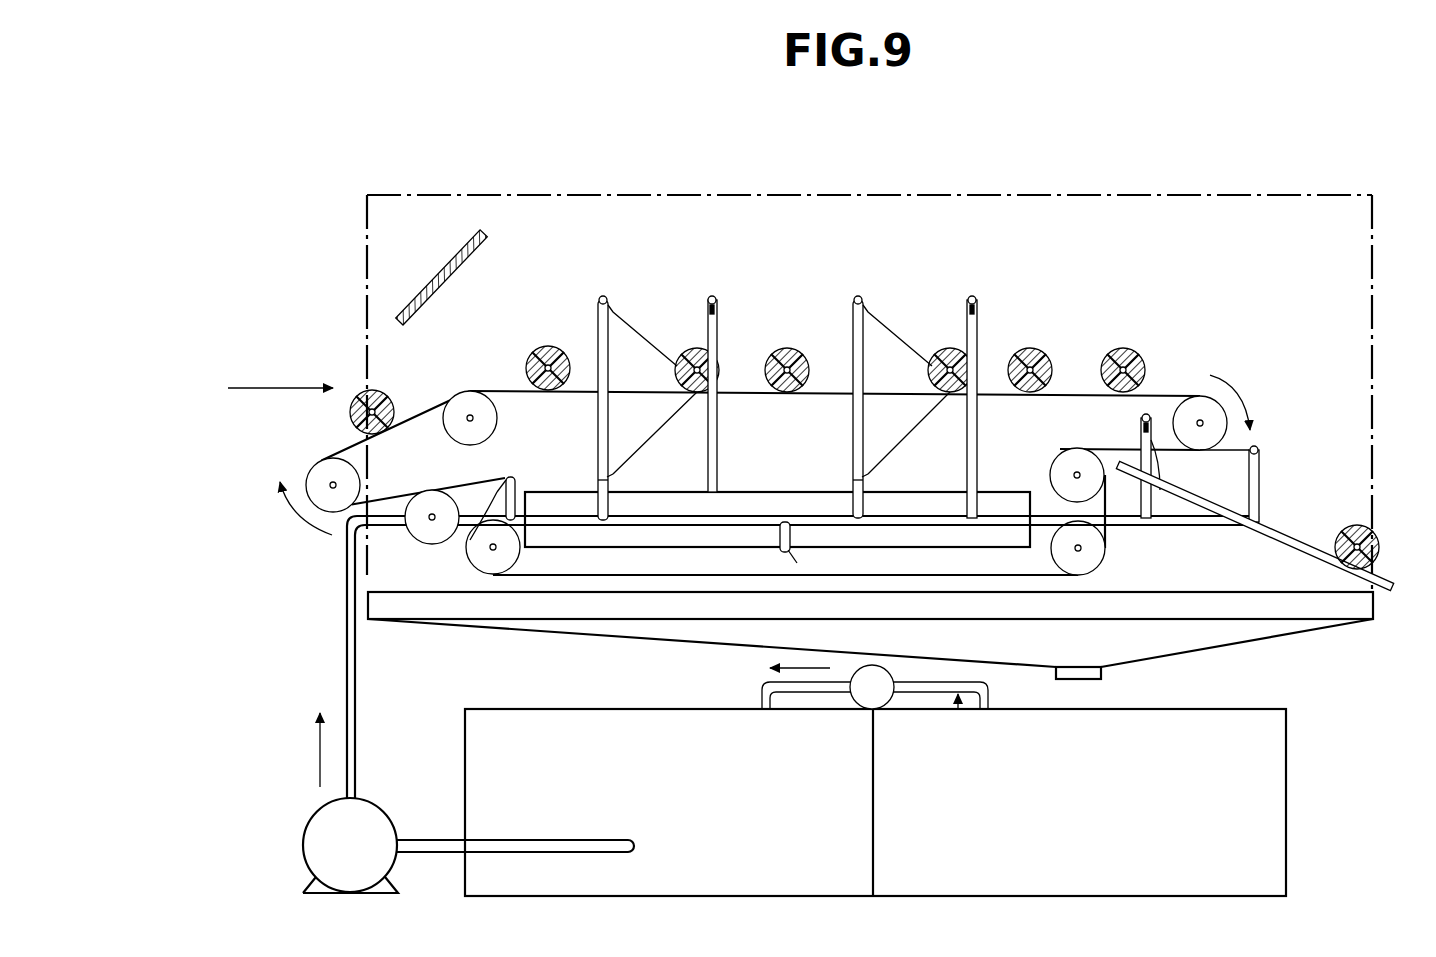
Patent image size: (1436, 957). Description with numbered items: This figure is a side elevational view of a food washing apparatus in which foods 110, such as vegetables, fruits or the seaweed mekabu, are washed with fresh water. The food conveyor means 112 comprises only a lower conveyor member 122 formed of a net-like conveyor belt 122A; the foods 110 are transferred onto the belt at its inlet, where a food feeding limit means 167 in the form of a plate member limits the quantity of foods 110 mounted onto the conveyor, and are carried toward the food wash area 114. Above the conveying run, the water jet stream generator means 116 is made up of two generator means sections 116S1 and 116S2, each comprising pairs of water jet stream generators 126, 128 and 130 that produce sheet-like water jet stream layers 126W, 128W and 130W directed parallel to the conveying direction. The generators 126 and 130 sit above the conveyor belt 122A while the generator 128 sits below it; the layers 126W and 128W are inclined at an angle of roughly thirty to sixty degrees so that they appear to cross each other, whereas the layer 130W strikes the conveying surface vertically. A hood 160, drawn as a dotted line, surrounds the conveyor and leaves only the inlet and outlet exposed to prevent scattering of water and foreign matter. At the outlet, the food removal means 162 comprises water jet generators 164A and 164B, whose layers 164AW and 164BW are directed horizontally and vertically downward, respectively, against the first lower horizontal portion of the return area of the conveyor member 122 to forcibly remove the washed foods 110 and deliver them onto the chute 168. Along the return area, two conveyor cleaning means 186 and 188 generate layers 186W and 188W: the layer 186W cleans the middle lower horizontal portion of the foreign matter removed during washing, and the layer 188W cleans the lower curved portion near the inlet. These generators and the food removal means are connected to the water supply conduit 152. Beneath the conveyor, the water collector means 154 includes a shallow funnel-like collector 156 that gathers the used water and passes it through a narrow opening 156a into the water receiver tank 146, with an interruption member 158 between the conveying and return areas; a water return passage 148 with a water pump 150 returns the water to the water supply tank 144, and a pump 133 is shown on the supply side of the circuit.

The foods 110 is at (790, 348).
The food conveyor means 112 is at (305, 470).
The food wash area 114 is at (740, 378).
The water jet stream generator means 116 is at (592, 273).
The generator means section 116S1 is at (707, 253).
The generator means section 116S2 is at (965, 240).
The lower conveyor member 122 is at (353, 442).
The net-like conveyor belt 122A is at (1068, 393).
The water jet stream generator 126 is at (605, 298).
The water jet stream layer 126W is at (637, 323).
The water jet stream generator 128 is at (603, 478).
The water jet stream layer 128W is at (700, 432).
The water jet stream generator 130 is at (712, 298).
The water jet stream layer 130W is at (977, 323).
The pump 133 is at (310, 830).
The water supply tank 144 is at (335, 697).
The water receiver tank 146 is at (1256, 770).
The water return passage 148 is at (958, 697).
The water pump 150 is at (878, 693).
The water supply conduit 152 is at (350, 660).
The water collector means 154 is at (1313, 645).
The collector 156 is at (370, 600).
The narrow opening 156a is at (1078, 673).
The interruption member 158 is at (545, 535).
The hood 160 is at (540, 195).
The food removal means 162 is at (1322, 410).
The water jet generator 164A is at (1255, 448).
The water jet stream layer 164AW is at (1227, 452).
The water jet generator 164B is at (1147, 418).
The water jet stream layer 164BW is at (1160, 490).
The food feeding limit means 167 is at (440, 275).
The chute 168 is at (1297, 537).
The conveyor cleaning means 186 is at (777, 537).
The water jet stream layer 186W is at (797, 563).
The conveyor cleaning means 188 is at (505, 480).
The water jet stream layer 188W is at (470, 540).